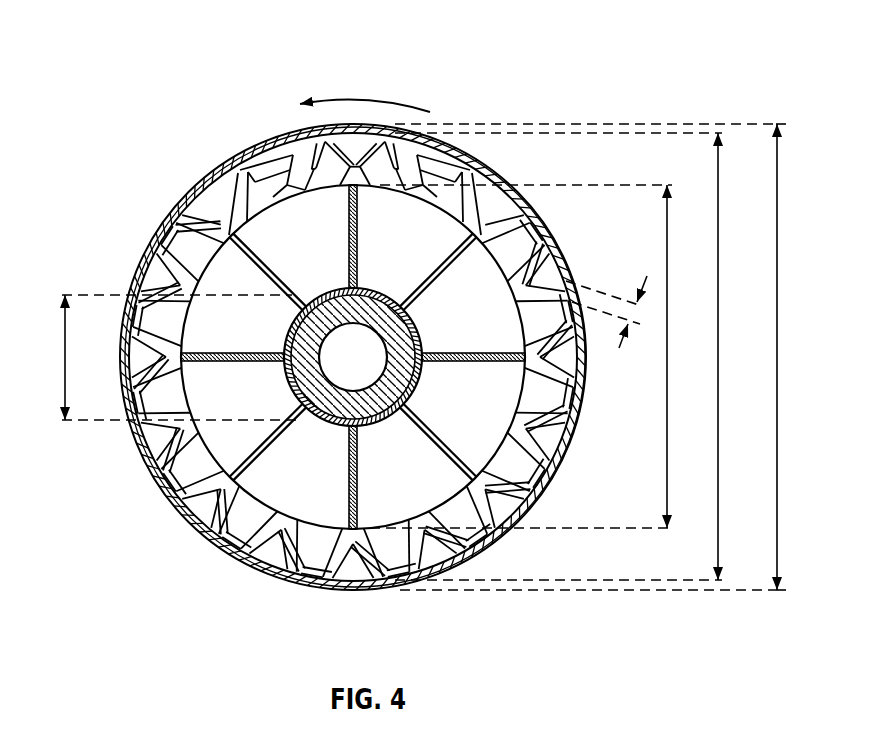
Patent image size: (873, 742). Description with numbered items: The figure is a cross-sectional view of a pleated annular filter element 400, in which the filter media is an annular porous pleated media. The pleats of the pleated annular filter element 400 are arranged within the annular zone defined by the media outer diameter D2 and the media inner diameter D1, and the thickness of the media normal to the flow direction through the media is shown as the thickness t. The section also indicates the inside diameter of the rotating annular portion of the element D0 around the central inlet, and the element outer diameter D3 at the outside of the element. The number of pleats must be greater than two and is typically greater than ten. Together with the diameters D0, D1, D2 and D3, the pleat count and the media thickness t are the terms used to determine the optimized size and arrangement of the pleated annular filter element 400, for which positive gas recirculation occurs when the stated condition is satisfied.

The pleated annular filter element 400 is at (155, 44).
The inside diameter of rotating annular portion of element D0 is at (65, 360).
The media inner diameter D1 is at (667, 360).
The media outer diameter D2 is at (718, 360).
The element outer diameter D3 is at (777, 360).
The thickness of the media t is at (620, 347).